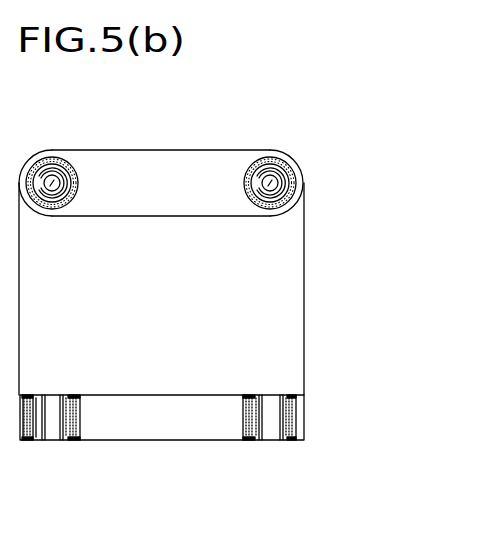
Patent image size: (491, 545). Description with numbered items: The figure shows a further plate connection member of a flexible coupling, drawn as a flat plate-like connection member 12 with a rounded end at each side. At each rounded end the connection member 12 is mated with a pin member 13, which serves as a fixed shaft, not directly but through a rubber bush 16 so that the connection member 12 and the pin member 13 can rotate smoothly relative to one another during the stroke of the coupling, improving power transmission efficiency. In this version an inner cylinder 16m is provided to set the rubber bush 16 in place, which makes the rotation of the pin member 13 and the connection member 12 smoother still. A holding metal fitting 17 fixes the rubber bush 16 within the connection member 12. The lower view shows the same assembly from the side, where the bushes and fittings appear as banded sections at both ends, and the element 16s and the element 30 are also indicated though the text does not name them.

The connection member 12 is at (198, 172).
The pin member 13 is at (60, 152).
The rubber bush 16 is at (75, 170).
The holding metal fitting 17 is at (63, 159).
The roller shaft 16s is at (72, 198).
The inner cylinder 16m is at (60, 205).
The belt 30 is at (123, 403).